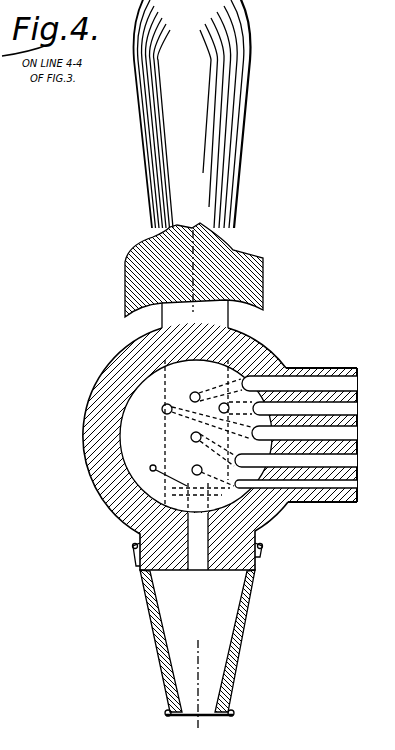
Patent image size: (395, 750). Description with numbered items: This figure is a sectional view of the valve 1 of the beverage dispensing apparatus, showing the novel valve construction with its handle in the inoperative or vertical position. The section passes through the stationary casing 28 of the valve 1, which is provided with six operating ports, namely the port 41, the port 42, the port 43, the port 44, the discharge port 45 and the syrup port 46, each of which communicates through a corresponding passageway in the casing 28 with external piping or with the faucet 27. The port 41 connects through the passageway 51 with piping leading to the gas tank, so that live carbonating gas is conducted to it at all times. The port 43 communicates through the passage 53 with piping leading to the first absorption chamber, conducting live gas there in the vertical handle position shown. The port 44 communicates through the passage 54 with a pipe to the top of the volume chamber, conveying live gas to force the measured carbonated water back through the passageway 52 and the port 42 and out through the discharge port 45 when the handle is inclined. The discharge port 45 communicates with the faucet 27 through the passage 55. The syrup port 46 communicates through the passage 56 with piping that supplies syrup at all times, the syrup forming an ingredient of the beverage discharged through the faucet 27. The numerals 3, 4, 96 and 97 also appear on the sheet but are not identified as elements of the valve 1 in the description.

The valve 1 is at (181, 449).
The ferrule 3 is at (167, 230).
The handle 4 is at (213, 107).
The faucet 27 is at (200, 653).
The stationary casing 28 is at (120, 472).
The port 41 is at (194, 392).
The port 42 is at (192, 440).
The port 43 is at (196, 415).
The port 44 is at (166, 414).
The discharge port 45 is at (203, 474).
The syrup port 46 is at (130, 503).
The passageway 51 is at (313, 407).
The passageway 52 is at (332, 457).
The passage 53 is at (328, 433).
The passage 54 is at (333, 423).
The passage 55 is at (200, 573).
The passage 56 is at (290, 480).
The element of adjacent figure 96 is at (17, 393).
The element of adjacent figure 97 is at (0, 428).